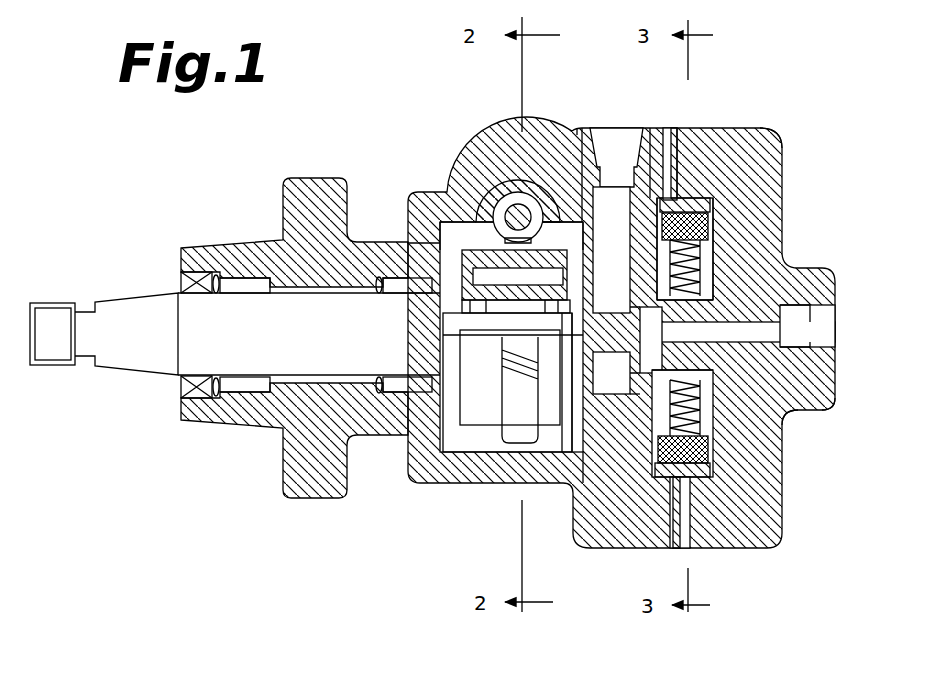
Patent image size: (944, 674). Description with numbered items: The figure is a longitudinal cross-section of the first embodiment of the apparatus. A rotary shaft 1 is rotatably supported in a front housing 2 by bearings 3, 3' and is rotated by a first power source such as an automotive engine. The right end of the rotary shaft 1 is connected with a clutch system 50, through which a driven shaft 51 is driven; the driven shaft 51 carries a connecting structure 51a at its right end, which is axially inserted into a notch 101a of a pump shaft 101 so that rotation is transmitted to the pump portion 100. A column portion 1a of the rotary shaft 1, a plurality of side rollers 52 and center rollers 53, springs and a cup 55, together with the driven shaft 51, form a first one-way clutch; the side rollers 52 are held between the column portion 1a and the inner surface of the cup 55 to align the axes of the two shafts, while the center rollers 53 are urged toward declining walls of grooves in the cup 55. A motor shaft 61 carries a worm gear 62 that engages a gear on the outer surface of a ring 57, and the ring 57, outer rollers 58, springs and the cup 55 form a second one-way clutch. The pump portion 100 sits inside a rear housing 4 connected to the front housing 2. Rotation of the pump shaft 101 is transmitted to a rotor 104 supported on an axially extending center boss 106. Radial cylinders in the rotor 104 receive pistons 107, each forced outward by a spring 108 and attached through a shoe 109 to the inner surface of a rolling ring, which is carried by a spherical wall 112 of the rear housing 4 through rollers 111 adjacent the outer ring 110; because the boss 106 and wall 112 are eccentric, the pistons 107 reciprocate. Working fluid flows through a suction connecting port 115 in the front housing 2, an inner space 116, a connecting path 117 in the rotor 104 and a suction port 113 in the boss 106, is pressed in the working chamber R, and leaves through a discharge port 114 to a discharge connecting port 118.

The rotary shaft 1 is at (126, 313).
The column portion 1a is at (473, 325).
The front housing 2 is at (293, 240).
The bearing 3 is at (225, 362).
The bearing 3' is at (395, 375).
The rear housing 4 is at (768, 133).
The clutch system 50 is at (452, 494).
The driven shaft 51 is at (470, 434).
The connecting structure 51a is at (566, 482).
The side rollers 52 is at (407, 243).
The center rollers 53 is at (414, 194).
The cup 55 is at (463, 262).
The ring 57 is at (497, 258).
The outer rollers 58 is at (548, 140).
The motor shaft 61 is at (518, 203).
The worm gear 62 is at (497, 200).
The pump portion 100 is at (679, 587).
The pump shaft 101 is at (632, 345).
The notch 101a is at (643, 372).
The rotor 104 is at (634, 548).
The center boss 106 is at (828, 402).
The pistons 107 is at (705, 258).
The spring 108 is at (700, 228).
The shoe 109 is at (697, 205).
The outer ring 110 is at (690, 190).
The rollers 111 is at (676, 200).
The spherical wall 112 is at (670, 185).
The suction port 113 is at (815, 350).
The discharge port 114 is at (828, 290).
The suction connecting port 115 is at (609, 150).
The inner space 116 is at (646, 165).
The connecting path 117 is at (662, 198).
The discharge connecting port 118 is at (820, 315).
The working chamber R is at (800, 430).